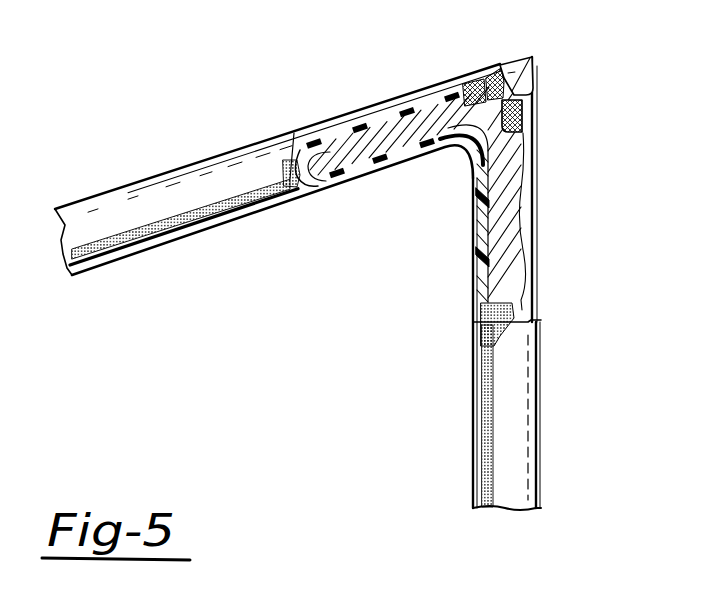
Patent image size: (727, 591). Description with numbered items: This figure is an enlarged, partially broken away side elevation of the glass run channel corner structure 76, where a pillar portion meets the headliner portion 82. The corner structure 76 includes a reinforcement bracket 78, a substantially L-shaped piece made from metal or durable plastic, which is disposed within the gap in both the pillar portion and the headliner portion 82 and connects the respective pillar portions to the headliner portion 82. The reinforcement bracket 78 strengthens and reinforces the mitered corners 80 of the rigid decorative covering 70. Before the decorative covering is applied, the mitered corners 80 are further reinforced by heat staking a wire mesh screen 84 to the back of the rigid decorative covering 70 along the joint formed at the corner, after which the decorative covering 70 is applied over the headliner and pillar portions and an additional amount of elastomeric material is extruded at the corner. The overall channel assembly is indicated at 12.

The frame assembly 12 is at (212, 148).
The rigid decorative covering 70 is at (101, 218).
The corner structure 76 is at (522, 38).
The reinforcement bracket 78 is at (326, 150).
The mitered corners 80 is at (540, 79).
The headliner portion 82 is at (155, 184).
The wire mesh screen 84 is at (538, 110).